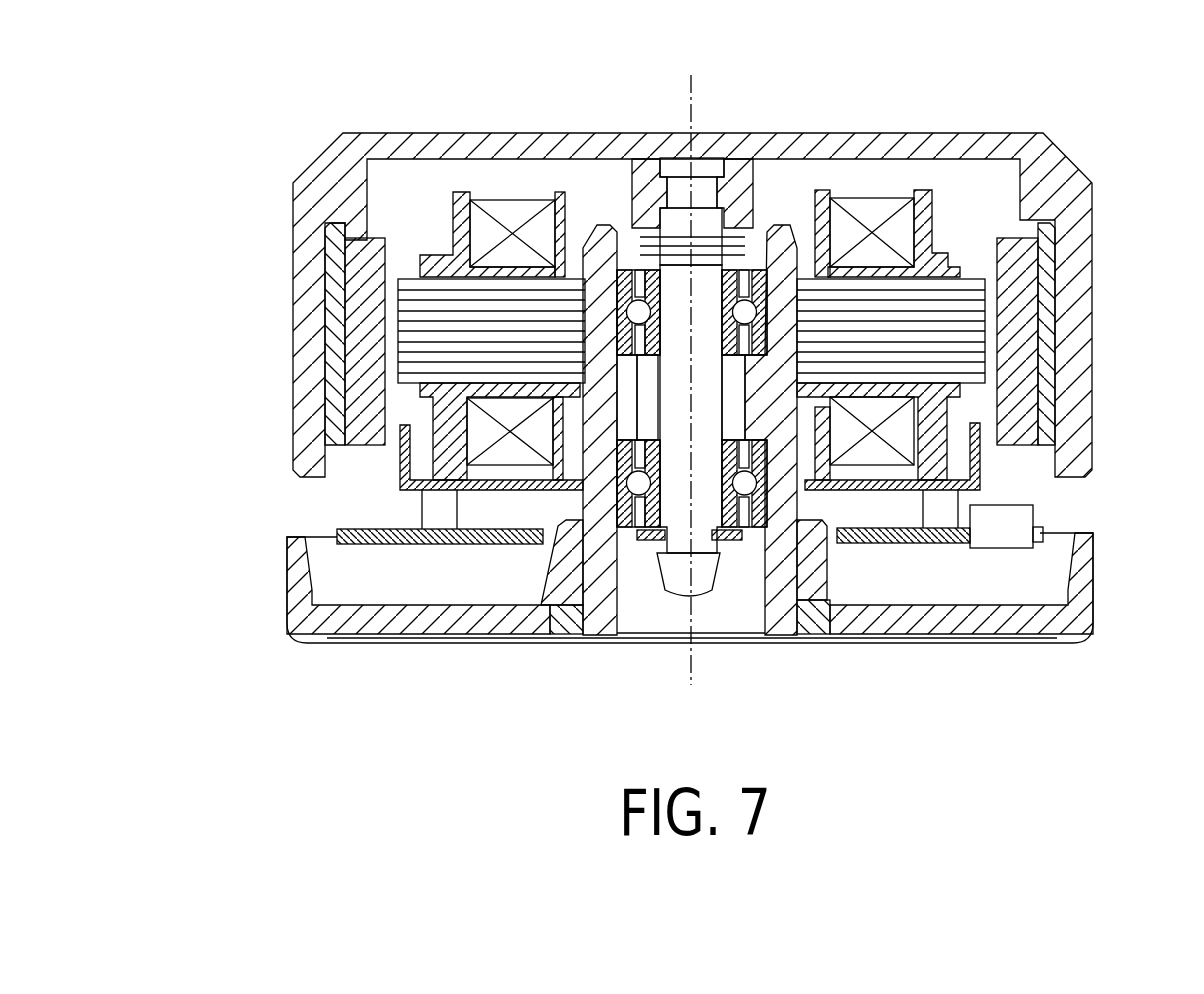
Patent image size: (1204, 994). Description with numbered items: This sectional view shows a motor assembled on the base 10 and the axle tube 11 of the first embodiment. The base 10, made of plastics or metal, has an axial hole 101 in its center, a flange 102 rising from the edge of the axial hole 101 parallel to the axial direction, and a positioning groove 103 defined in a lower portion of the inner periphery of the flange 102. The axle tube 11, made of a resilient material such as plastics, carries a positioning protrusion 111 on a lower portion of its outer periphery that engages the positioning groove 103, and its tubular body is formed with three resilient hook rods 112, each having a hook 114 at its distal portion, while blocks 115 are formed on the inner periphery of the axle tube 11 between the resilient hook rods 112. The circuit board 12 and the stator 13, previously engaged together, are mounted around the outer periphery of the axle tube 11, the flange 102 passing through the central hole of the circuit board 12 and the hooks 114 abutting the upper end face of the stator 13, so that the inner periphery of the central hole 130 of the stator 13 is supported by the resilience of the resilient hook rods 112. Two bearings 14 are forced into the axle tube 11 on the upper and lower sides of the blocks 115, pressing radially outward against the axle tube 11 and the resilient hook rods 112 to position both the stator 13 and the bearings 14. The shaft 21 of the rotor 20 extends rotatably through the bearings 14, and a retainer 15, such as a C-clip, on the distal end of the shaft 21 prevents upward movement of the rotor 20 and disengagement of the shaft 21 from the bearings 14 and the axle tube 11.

The base 10 is at (295, 583).
The axle tube 11 is at (790, 197).
The circuit board 12 is at (922, 543).
The stator 13 is at (930, 317).
The bearings 14 is at (632, 230).
The retainer 15 is at (643, 540).
The rotor 20 is at (878, 147).
The shaft 21 is at (703, 298).
The axial hole 101 is at (728, 623).
The flange 102 is at (567, 557).
The positioning groove 103 is at (547, 625).
The positioning protrusion 111 is at (593, 612).
The resilient hook rod 112 is at (613, 290).
The hook 114 is at (603, 253).
The blocks 115 is at (793, 455).
The central hole 130 is at (797, 362).